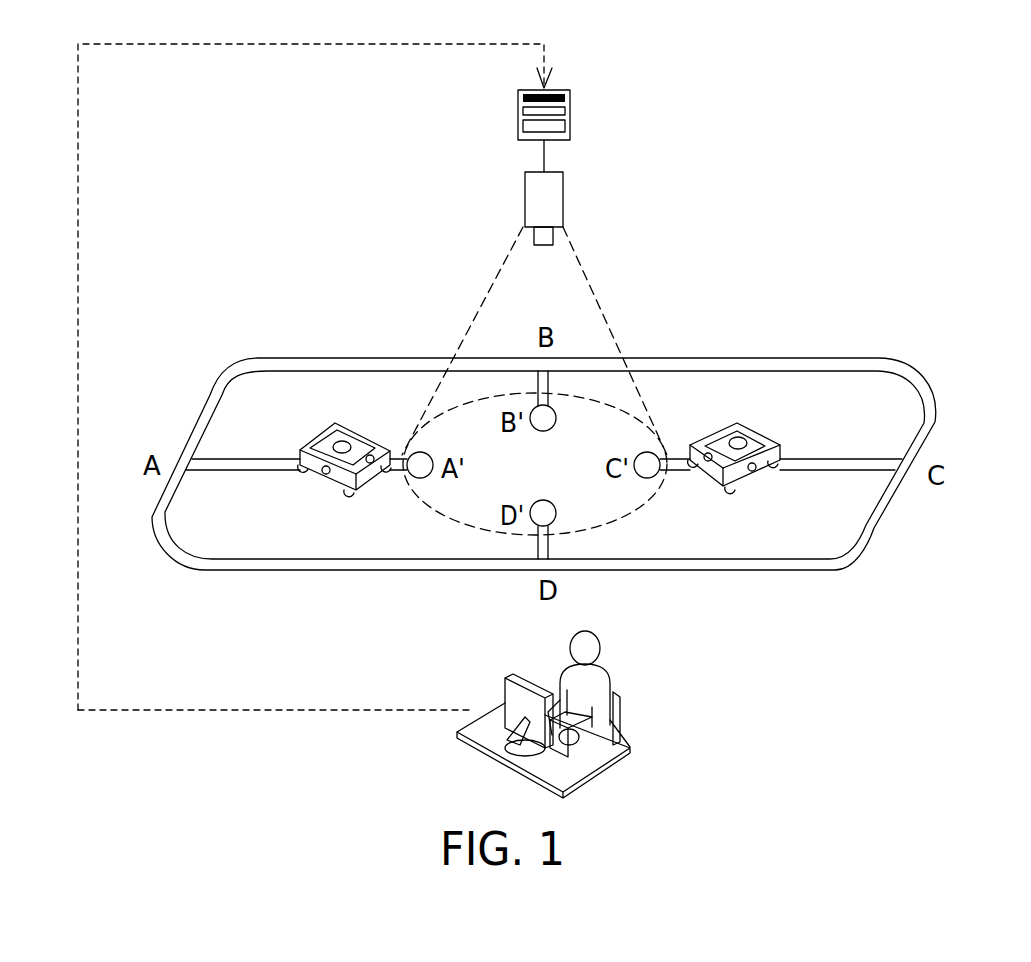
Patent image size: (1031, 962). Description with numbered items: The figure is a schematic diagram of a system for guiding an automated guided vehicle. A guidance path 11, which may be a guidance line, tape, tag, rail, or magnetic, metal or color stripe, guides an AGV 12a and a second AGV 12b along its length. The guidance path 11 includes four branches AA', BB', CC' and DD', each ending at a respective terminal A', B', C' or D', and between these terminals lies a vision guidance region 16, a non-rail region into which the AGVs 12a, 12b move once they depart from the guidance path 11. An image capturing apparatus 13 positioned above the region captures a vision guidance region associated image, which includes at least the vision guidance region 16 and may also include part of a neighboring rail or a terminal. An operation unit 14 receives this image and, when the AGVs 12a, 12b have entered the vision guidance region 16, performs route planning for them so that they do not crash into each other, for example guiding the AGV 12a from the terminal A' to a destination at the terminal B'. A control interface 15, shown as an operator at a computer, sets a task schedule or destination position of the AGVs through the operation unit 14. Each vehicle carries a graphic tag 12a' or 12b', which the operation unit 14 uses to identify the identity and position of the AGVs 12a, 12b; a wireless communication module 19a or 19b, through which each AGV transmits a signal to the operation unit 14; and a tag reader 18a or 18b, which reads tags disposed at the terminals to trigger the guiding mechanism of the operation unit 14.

The guidance path 11 is at (856, 360).
The AGV 12a is at (375, 468).
The AGV 12b is at (727, 469).
The graphic tag 12a' is at (371, 386).
The graphic tag 12b' is at (775, 384).
The image capturing apparatus 13 is at (563, 199).
The operation unit 14 is at (570, 113).
The control interface 15 is at (522, 682).
The vision guidance region 16 is at (583, 508).
The tag reader 18a is at (327, 474).
The tag reader 18b is at (752, 472).
The wireless communication module 19a is at (371, 455).
The wireless communication module 19b is at (707, 455).